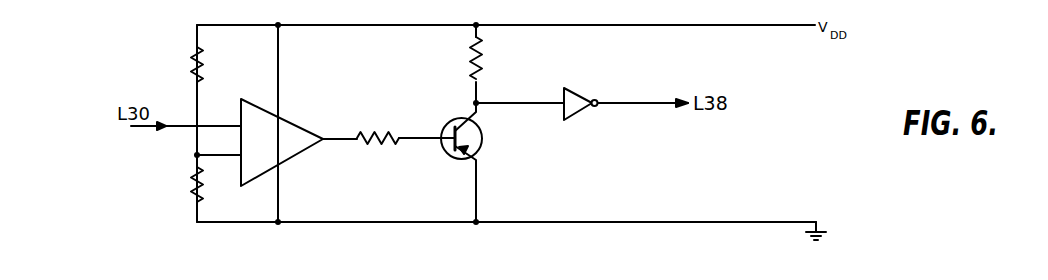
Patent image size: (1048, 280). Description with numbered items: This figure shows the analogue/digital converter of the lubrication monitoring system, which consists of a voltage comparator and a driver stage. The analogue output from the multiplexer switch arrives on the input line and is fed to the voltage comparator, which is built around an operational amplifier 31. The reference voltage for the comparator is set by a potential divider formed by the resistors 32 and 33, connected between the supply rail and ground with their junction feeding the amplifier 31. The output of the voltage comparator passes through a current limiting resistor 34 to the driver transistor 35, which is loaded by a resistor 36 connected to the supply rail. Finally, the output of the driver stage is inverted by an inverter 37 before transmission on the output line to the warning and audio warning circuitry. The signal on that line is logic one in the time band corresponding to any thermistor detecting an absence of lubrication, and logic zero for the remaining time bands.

The operational amplifier 31 is at (277, 150).
The resistor 32 is at (218, 56).
The resistor 33 is at (195, 200).
The current limiting resistor 34 is at (395, 132).
The driver transistor 35 is at (483, 143).
The resistor 36 is at (483, 71).
The inverter 37 is at (584, 98).